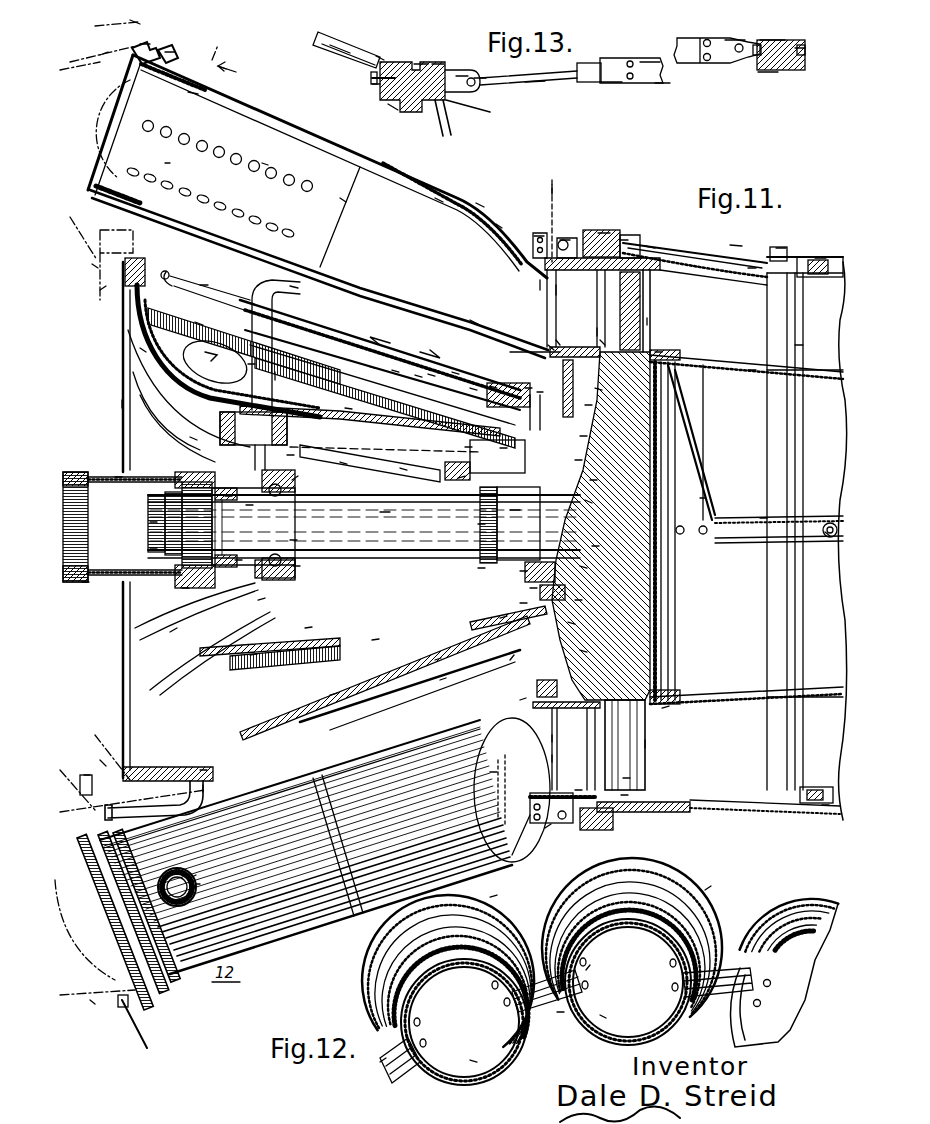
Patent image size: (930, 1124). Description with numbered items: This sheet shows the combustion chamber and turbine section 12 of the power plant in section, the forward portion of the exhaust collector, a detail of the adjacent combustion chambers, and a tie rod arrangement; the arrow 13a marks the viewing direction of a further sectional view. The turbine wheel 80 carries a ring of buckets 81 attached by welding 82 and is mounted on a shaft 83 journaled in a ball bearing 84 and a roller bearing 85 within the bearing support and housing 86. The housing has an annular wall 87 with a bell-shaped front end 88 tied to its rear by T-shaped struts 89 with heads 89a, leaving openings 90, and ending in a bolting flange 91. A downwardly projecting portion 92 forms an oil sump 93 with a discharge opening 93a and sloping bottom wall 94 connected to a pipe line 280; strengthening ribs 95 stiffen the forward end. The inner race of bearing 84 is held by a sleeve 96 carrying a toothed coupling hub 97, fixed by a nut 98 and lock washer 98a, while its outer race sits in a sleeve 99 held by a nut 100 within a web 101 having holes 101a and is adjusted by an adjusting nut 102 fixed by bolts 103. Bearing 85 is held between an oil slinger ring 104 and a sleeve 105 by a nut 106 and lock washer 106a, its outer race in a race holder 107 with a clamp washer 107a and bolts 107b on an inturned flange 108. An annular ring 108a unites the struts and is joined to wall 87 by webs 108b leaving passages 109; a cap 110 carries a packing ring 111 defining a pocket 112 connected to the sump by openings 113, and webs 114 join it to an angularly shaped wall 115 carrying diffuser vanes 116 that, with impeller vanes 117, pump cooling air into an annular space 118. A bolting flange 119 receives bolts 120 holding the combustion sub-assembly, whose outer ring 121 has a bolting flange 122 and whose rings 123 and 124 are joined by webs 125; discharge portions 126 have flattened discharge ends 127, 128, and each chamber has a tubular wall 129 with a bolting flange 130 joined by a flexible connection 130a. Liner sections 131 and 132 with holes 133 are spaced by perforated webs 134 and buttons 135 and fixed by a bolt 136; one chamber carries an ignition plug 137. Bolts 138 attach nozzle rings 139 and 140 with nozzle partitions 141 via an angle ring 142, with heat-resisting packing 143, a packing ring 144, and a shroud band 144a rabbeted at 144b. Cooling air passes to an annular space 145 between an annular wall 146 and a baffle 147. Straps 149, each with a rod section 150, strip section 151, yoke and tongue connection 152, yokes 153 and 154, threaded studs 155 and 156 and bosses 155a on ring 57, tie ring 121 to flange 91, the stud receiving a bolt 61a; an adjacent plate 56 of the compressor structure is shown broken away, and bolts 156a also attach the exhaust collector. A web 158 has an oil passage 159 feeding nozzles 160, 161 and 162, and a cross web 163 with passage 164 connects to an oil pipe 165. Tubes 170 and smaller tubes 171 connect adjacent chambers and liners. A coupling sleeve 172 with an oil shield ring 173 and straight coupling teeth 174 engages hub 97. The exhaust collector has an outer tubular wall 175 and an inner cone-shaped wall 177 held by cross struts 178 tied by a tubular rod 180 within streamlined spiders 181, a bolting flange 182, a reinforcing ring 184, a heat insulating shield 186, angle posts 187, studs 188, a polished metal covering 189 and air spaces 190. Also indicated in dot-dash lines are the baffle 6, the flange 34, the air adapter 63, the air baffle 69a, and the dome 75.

In FIG. 11, the baffle 6 is at (109, 23).
In FIG. 11, the combustion chamber and turbine section 12 is at (224, 68).
In FIG. 11, the arrow 13a is at (550, 195).
In FIG. 13, the annular bolting flange 34 is at (418, 64).
In FIG. 11, the annular bolting flange 34 is at (100, 760).
In FIG. 13, the plate 56 is at (342, 53).
In FIG. 13, the ring 57 is at (378, 56).
In FIG. 13, the bolt 61a is at (372, 86).
In FIG. 11, the air adapter 63 is at (100, 55).
In FIG. 11, the annular cone-shaped air baffle 69a is at (89, 259).
In FIG. 11, the combustion chamber dome 75 is at (90, 1000).
In FIG. 11, the turbine wheel 80 is at (592, 546).
In FIG. 11, the ring of buckets 81 is at (647, 318).
In FIG. 11, the welding 82 is at (655, 352).
In FIG. 11, the shaft 83 is at (392, 520).
In FIG. 11, the ball bearing 84 is at (300, 566).
In FIG. 11, the roller bearing 85 is at (520, 571).
In FIG. 11, the bearing support and housing 86 is at (122, 400).
In FIG. 11, the annular wall 87 is at (345, 408).
In FIG. 11, the bell-shaped front end 88 is at (140, 348).
In FIG. 11, the strut 89 is at (415, 375).
In FIG. 11, the head 89a is at (428, 374).
In FIG. 11, the opening 90 is at (368, 366).
In FIG. 13, the annular bolting flange 91 is at (436, 64).
In FIG. 11, the annular bolting flange 91 is at (100, 290).
In FIG. 11, the downwardly projecting portion 92 is at (372, 640).
In FIG. 11, the lubricating oil sump 93 is at (200, 770).
In FIG. 11, the discharge opening 93a is at (203, 785).
In FIG. 11, the bottom wall 94 is at (330, 695).
In FIG. 11, the strengthening ribs 95 is at (170, 632).
In FIG. 11, the sleeve 96 is at (235, 560).
In FIG. 11, the toothed coupling hub 97 is at (182, 588).
In FIG. 11, the nut 98 is at (150, 548).
In FIG. 11, the lock washer 98a is at (150, 522).
In FIG. 11, the sleeve 99 is at (298, 476).
In FIG. 11, the nut 100 is at (290, 540).
In FIG. 11, the web 101 is at (287, 455).
In FIG. 11, the holes 101a is at (250, 655).
In FIG. 11, the adjusting nut 102 is at (258, 600).
In FIG. 11, the bolts 103 is at (305, 628).
In FIG. 11, the oil slinger ring 104 is at (580, 566).
In FIG. 11, the sleeve 105 is at (514, 521).
In FIG. 11, the nut 106 is at (478, 568).
In FIG. 11, the lock washer 106a is at (478, 524).
In FIG. 11, the race holder 107 is at (530, 588).
In FIG. 11, the clamp washer 107a is at (568, 622).
In FIG. 11, the bolts 107b is at (575, 460).
In FIG. 11, the inturned flange 108 is at (500, 448).
In FIG. 11, the annular ring 108a is at (520, 700).
In FIG. 11, the webs 108b is at (465, 447).
In FIG. 11, the passages 109 is at (500, 618).
In FIG. 11, the cap 110 is at (590, 480).
In FIG. 11, the packing ring 111 is at (585, 500).
In FIG. 11, the annular pocket 112 is at (575, 600).
In FIG. 11, the openings 113 is at (520, 603).
In FIG. 11, the webs 114 is at (580, 436).
In FIG. 11, the angularly shaped wall 115 is at (537, 392).
In FIG. 11, the diffuser vanes 116 is at (585, 405).
In FIG. 11, the impeller vanes 117 is at (580, 650).
In FIG. 11, the annular space 118 is at (595, 388).
In FIG. 11, the annular bolting flange 119 is at (490, 386).
In FIG. 11, the bolts 120 is at (470, 388).
In FIG. 13, the outer ring 121 is at (768, 72).
In FIG. 11, the outer ring 121 is at (565, 240).
In FIG. 13, the bolting flange 122 is at (772, 40).
In FIG. 11, the bolting flange 122 is at (604, 233).
In FIG. 11, the ring 123 is at (556, 340).
In FIG. 11, the inner ring 124 is at (525, 388).
In FIG. 11, the webs 125 is at (548, 345).
In FIG. 11, the discharge portions 126 is at (478, 204).
In FIG. 11, the discharge ends 127 is at (572, 296).
In FIG. 11, the flattened portion 128 is at (490, 772).
In FIG. 11, the tubular wall 129 is at (340, 145).
In FIG. 12, the tubular wall 129 is at (470, 1060).
In FIG. 11, the bolting flange 130 is at (147, 44).
In FIG. 12, the bolting flange 130 is at (705, 890).
In FIG. 11, the flexible connection 130a is at (170, 52).
In FIG. 12, the flexible connection 130a is at (490, 897).
In FIG. 11, the rear liner section 131 is at (437, 200).
In FIG. 11, the forward liner section 132 is at (342, 200).
In FIG. 12, the forward liner section 132 is at (600, 1015).
In FIG. 11, the holes 133 is at (262, 163).
In FIG. 12, the holes 133 is at (590, 965).
In FIG. 11, the perforated webs 134 is at (192, 92).
In FIG. 11, the buttons 135 is at (470, 320).
In FIG. 11, the bolt 136 is at (498, 224).
In FIG. 11, the ignition plug 137 is at (195, 322).
In FIG. 11, the bolts 138 is at (600, 340).
In FIG. 11, the inner nozzle ring 139 is at (596, 330).
In FIG. 11, the outer nozzle ring 140 is at (540, 285).
In FIG. 11, the nozzle partitions 141 is at (640, 296).
In FIG. 11, the angle ring 142 is at (552, 755).
In FIG. 11, the heat-resisting packing 143 is at (575, 790).
In FIG. 11, the annular packing ring 144 is at (552, 735).
In FIG. 11, the turbine wheel shroud band 144a is at (628, 795).
In FIG. 11, the rabbet 144b is at (630, 778).
In FIG. 11, the annular space 145 is at (452, 372).
In FIG. 11, the annular wall 146 is at (392, 370).
In FIG. 11, the baffle 147 is at (290, 286).
In FIG. 13, the straps 149 is at (668, 85).
In FIG. 11, the straps 149 is at (536, 236).
In FIG. 13, the rod section 150 is at (533, 86).
In FIG. 13, the flat strip section 151 is at (650, 60).
In FIG. 13, the yoke and tongue connection 152 is at (608, 84).
In FIG. 13, the yoke 153 is at (492, 68).
In FIG. 13, the yoke 154 is at (736, 40).
In FIG. 13, the threaded stud 155 is at (460, 76).
In FIG. 13, the enlarged bosses 155a is at (392, 110).
In FIG. 13, the threaded stud 156 is at (800, 52).
In FIG. 11, the bolts 156a is at (648, 246).
In FIG. 11, the web 158 is at (400, 468).
In FIG. 11, the oil passage 159 is at (340, 462).
In FIG. 11, the oil discharge nozzle 160 is at (458, 478).
In FIG. 11, the oil discharge nozzle 161 is at (246, 505).
In FIG. 11, the oil discharge nozzle 162 is at (225, 496).
In FIG. 11, the cross web 163 is at (275, 372).
In FIG. 11, the passage 164 is at (248, 364).
In FIG. 11, the oil pipe 165 is at (200, 285).
In FIG. 11, the tubes 170 is at (196, 875).
In FIG. 12, the tubes 170 is at (557, 1012).
In FIG. 11, the smaller tubes 171 is at (165, 163).
In FIG. 12, the smaller tubes 171 is at (380, 1062).
In FIG. 11, the coupling sleeve 172 is at (115, 477).
In FIG. 11, the oil shield ring 173 is at (190, 437).
In FIG. 11, the straight coupling teeth 174 is at (82, 582).
In FIG. 11, the outer tubular wall 175 is at (750, 268).
In FIG. 11, the inner cone-shaped wall 177 is at (748, 370).
In FIG. 11, the cross struts 178 is at (825, 532).
In FIG. 11, the tubular rod 180 is at (760, 518).
In FIG. 11, the streamlined spiders 181 is at (816, 333).
In FIG. 11, the reinforcing ring and bolting flange 182 is at (622, 240).
In FIG. 11, the reinforcing ring 184 is at (662, 708).
In FIG. 11, the heat insulating shield 186 is at (700, 498).
In FIG. 11, the angle posts 187 is at (820, 258).
In FIG. 11, the studs 188 is at (782, 248).
In FIG. 11, the polished metal covering 189 is at (735, 245).
In FIG. 11, the air spaces 190 is at (822, 805).
In FIG. 11, the pipe line 280 is at (84, 775).